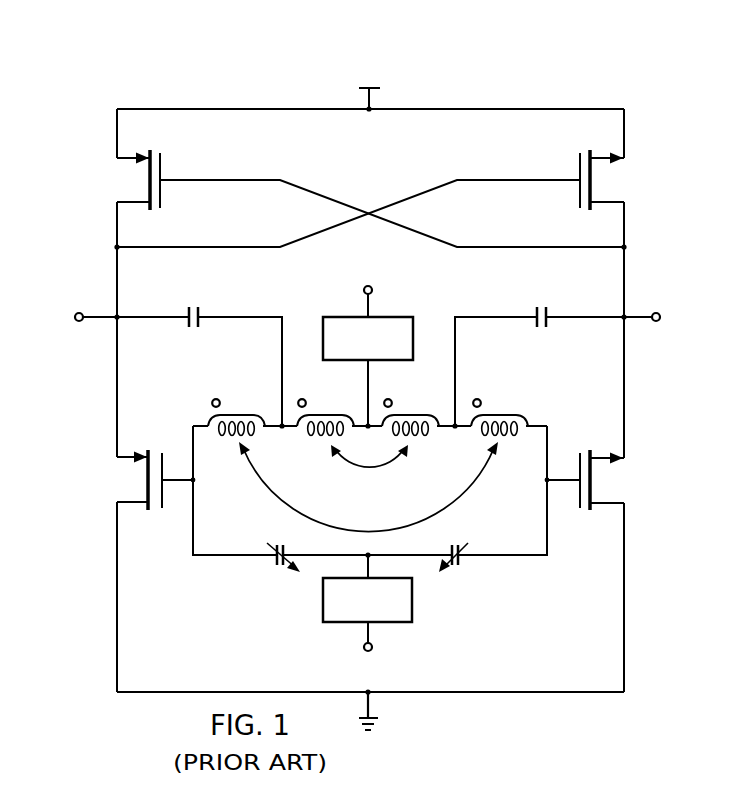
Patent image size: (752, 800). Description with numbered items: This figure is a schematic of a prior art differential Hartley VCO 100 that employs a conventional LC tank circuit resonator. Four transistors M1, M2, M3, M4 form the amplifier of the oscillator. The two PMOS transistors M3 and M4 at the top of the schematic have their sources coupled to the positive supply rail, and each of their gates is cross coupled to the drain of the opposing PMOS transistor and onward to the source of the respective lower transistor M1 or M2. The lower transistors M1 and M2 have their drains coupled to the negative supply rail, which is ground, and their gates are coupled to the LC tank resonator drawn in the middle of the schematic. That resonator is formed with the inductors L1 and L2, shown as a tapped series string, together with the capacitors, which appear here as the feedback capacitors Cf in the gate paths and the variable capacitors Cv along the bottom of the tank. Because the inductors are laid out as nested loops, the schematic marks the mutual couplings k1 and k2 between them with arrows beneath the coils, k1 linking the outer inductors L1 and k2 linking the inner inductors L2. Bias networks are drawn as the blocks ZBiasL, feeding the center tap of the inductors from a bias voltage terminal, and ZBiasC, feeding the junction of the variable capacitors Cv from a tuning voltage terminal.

The differential Hartley VCO 100 is at (245, 66).
The transistor M1 is at (144, 480).
The transistor M2 is at (598, 480).
The PMOS transistor M3 is at (126, 180).
The PMOS transistor M4 is at (616, 180).
The feedback capacitor Cf is at (370, 304).
The inductor L1 is at (368, 414).
The inductor L2 is at (368, 414).
The varactor (variable capacitor) Cv is at (367, 569).
The inductor bias impedance ZBiasL is at (368, 338).
The varactor bias impedance ZBiasC is at (367, 600).
The mutual coupling k1 is at (368, 487).
The mutual coupling k2 is at (369, 456).